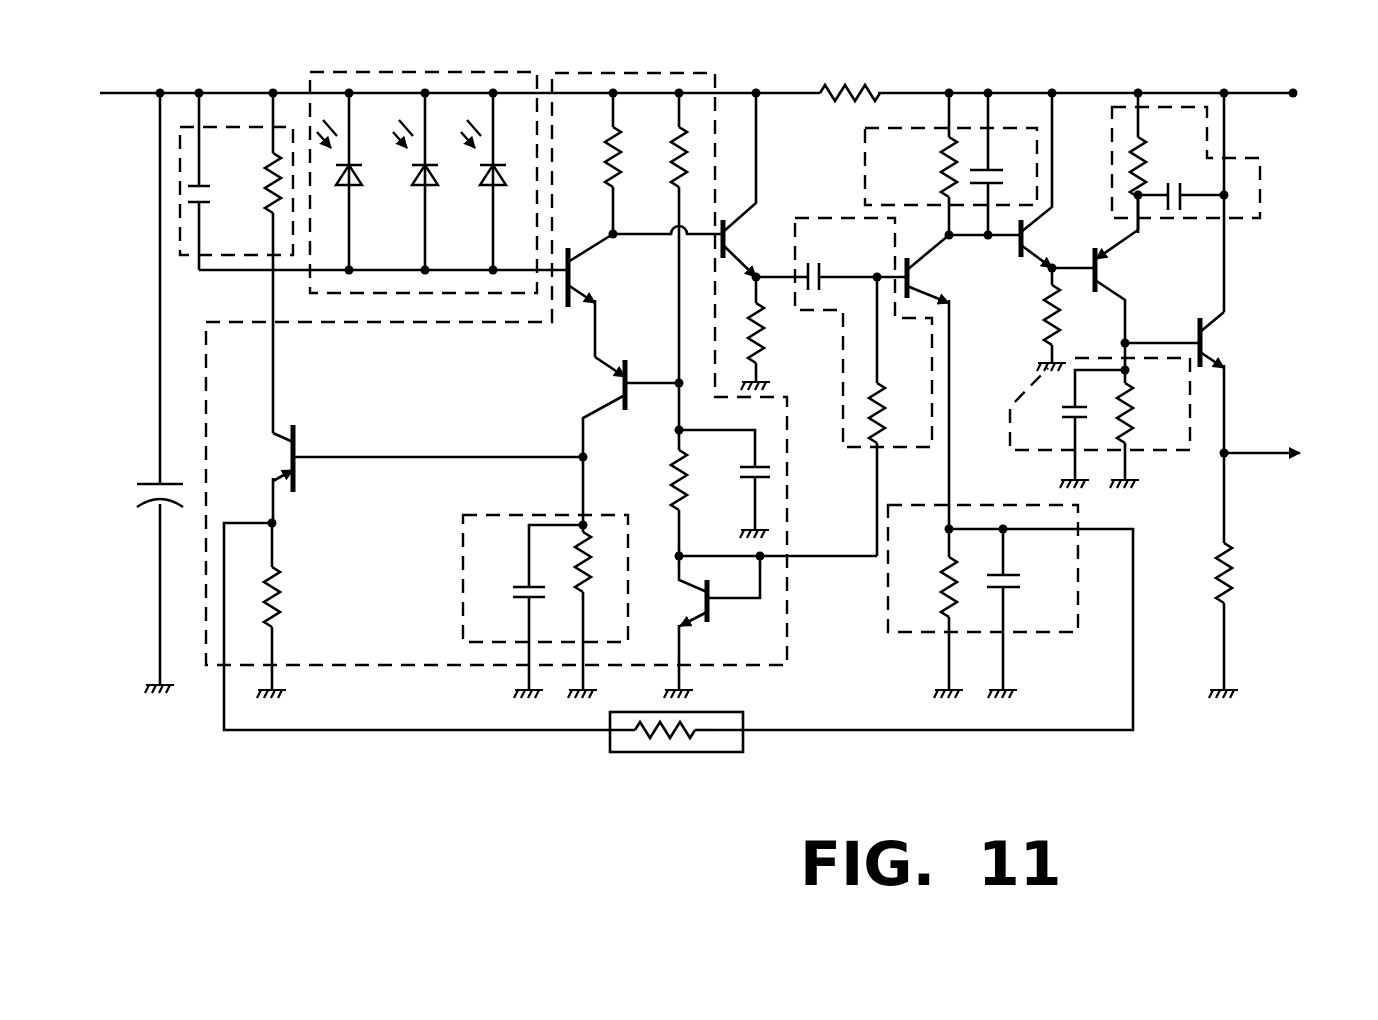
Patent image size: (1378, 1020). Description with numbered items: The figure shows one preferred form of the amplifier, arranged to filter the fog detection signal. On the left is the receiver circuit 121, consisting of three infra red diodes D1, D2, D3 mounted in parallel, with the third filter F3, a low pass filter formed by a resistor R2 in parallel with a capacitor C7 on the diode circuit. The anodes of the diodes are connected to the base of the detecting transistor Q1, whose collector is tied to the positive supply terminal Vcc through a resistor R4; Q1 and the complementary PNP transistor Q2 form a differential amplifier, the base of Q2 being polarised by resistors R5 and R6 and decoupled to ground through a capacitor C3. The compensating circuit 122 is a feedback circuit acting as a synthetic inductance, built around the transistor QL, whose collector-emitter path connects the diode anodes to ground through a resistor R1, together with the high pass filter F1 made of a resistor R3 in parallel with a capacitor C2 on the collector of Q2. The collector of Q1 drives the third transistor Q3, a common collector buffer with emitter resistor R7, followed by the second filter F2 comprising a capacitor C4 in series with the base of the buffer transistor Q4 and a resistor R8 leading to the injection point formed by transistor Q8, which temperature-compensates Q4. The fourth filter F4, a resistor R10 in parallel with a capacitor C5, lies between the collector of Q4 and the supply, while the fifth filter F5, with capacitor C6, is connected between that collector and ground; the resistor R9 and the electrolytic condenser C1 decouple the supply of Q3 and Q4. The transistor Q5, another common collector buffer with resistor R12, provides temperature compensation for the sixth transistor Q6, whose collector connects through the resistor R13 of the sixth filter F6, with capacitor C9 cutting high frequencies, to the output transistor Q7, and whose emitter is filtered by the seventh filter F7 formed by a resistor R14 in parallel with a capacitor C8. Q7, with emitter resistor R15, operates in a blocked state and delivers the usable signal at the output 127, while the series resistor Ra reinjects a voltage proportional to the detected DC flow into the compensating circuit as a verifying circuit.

The positive supply terminal Vcc is at (1328, 95).
The electrolytic condenser C1 is at (169, 393).
The capacitor C2 is at (526, 611).
The capacitor C3 is at (724, 484).
The capacitor C4 is at (831, 262).
The capacitor C5 is at (1001, 164).
The capacitor C6 is at (1021, 612).
The capacitor C7 is at (214, 181).
The capacitor C8 is at (1069, 429).
The capacitor C9 is at (1183, 180).
The resistor R1 is at (289, 610).
The resistor R2 is at (256, 263).
The resistor R3 is at (594, 610).
The resistor R4 is at (592, 163).
The resistor R5 is at (657, 261).
The resistor R6 is at (650, 493).
The resistor R7 is at (773, 333).
The resistor R8 is at (896, 416).
The resistor R9 is at (834, 110).
The resistor R10 is at (917, 164).
The resistor R12 is at (979, 483).
The resistor R13 is at (1161, 161).
The resistor R14 is at (1148, 429).
The resistor R15 is at (1250, 575).
The series resistor Ra is at (625, 752).
The detecting transistor Q1 is at (601, 295).
The second transistor Q2 is at (615, 441).
The third transistor Q3 is at (752, 187).
The fifth transistor Q4 is at (939, 384).
The transistor Q5 is at (1050, 183).
The sixth transistor Q6 is at (1124, 285).
The seventh transistor Q7 is at (1224, 385).
The transistor Q8 is at (675, 627).
The fourth transistor QL is at (410, 476).
The diode D1 is at (357, 181).
The diode D2 is at (433, 181).
The diode D3 is at (499, 181).
The high pass filter F1 is at (460, 546).
The second filter F2 is at (936, 421).
The third filter F3 is at (174, 229).
The fourth filter F4 is at (907, 126).
The fifth filter F5 is at (1020, 638).
The sixth filter F6 is at (1268, 182).
The seventh filter F7 is at (1184, 453).
The receiver circuit 121 is at (516, 30).
The compensating circuit 122 is at (409, 665).
The output of the circuit 127 is at (1262, 457).